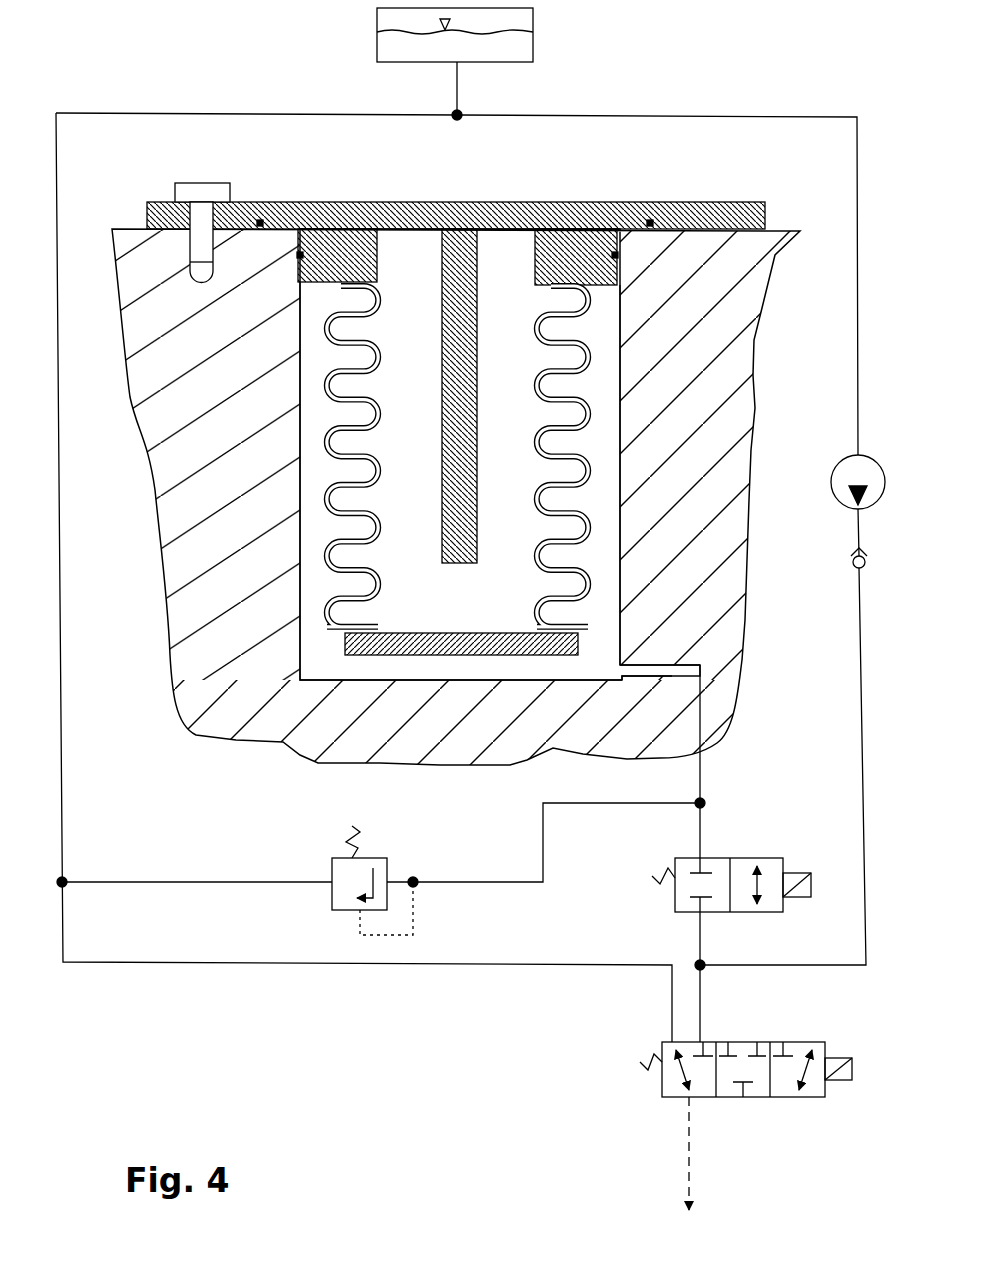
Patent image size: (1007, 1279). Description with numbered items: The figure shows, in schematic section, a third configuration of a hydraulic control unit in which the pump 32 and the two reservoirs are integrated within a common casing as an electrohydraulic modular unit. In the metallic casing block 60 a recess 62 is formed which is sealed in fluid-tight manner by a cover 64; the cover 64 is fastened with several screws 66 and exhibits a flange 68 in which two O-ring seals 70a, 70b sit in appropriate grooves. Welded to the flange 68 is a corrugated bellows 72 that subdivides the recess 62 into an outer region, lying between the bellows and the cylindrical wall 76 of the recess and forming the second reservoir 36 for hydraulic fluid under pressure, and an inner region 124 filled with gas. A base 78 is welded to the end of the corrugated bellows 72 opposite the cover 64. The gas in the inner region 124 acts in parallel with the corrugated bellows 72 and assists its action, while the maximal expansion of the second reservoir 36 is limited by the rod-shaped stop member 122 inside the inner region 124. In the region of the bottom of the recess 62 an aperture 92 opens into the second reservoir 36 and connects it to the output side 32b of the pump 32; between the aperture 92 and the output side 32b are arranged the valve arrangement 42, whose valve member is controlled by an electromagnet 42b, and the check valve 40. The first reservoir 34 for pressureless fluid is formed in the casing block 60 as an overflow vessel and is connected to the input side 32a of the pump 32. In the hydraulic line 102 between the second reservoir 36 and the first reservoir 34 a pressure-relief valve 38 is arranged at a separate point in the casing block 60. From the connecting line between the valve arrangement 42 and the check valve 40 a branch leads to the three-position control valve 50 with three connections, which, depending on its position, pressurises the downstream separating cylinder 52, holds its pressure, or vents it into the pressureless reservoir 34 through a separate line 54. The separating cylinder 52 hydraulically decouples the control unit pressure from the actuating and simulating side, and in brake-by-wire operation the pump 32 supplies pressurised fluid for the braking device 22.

The first reservoir 34 is at (536, 45).
The screws 66 is at (210, 183).
The cover 64 is at (633, 203).
The O-ring seal 70a is at (262, 228).
The O-ring seal 70b is at (300, 257).
The flange 68 is at (378, 262).
The rod-shaped stop member 122 is at (477, 449).
The casing block 60 is at (711, 341).
The corrugated bellows 72 is at (587, 460).
The cylindrical wall 76 is at (610, 388).
The second reservoir 36 is at (613, 549).
The inner region 124 is at (460, 460).
The base 78 is at (509, 655).
The aperture 92 is at (603, 677).
The recess 62 is at (318, 695).
The pressure-relief valve 38 is at (380, 858).
The hydraulic line 102 is at (506, 884).
The separate line 54 is at (476, 967).
The valve arrangement 42 is at (735, 858).
The electromagnet 42b is at (797, 873).
The input side 32a is at (858, 446).
The pump 32 is at (831, 483).
The output side 32b is at (857, 525).
The check valve 40 is at (851, 567).
The 3-position control valve 50 is at (742, 1043).
The separating cylinder 52 is at (741, 1159).
The braking device 22 is at (741, 1159).